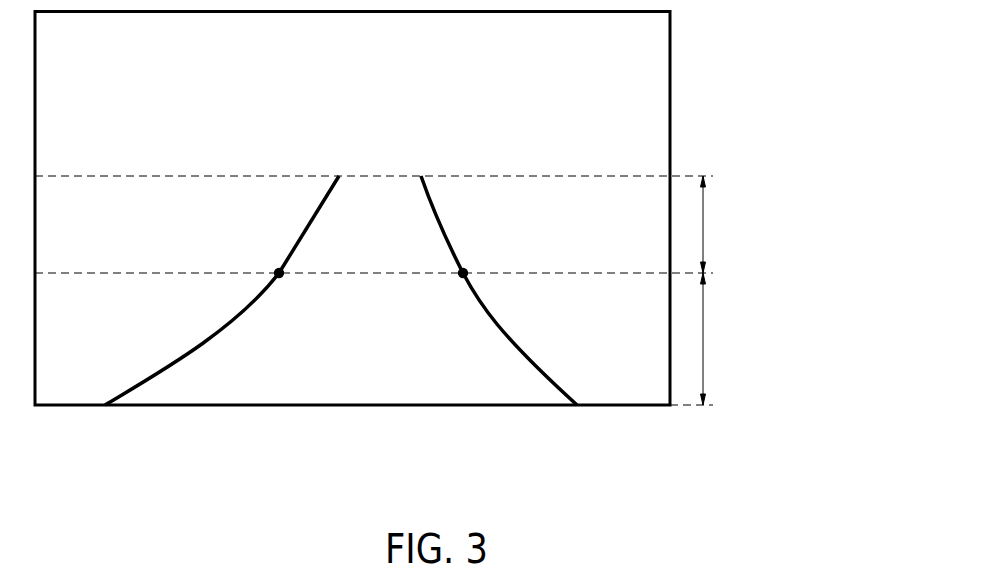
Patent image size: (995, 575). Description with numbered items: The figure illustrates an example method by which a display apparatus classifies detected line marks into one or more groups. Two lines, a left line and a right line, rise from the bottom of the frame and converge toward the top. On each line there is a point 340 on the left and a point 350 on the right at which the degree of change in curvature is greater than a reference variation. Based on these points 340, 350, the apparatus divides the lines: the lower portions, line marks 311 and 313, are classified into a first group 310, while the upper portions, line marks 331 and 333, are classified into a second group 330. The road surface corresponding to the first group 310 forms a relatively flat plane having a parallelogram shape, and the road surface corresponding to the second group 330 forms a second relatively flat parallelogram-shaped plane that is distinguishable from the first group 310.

The first group 310 is at (757, 323).
The line mark 311 is at (178, 360).
The line mark 313 is at (528, 360).
The second group 330 is at (757, 208).
The line mark 331 is at (316, 217).
The line mark 333 is at (437, 218).
The point 340 is at (279, 273).
The point 350 is at (463, 273).